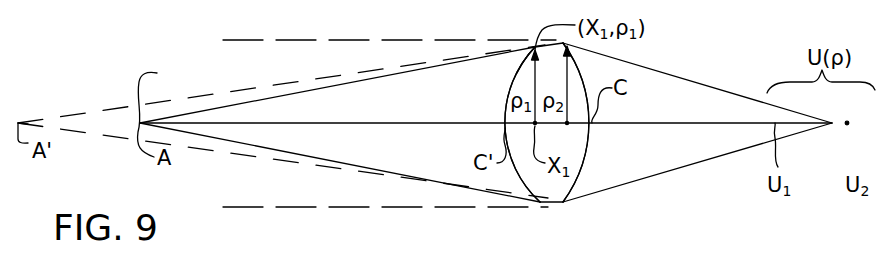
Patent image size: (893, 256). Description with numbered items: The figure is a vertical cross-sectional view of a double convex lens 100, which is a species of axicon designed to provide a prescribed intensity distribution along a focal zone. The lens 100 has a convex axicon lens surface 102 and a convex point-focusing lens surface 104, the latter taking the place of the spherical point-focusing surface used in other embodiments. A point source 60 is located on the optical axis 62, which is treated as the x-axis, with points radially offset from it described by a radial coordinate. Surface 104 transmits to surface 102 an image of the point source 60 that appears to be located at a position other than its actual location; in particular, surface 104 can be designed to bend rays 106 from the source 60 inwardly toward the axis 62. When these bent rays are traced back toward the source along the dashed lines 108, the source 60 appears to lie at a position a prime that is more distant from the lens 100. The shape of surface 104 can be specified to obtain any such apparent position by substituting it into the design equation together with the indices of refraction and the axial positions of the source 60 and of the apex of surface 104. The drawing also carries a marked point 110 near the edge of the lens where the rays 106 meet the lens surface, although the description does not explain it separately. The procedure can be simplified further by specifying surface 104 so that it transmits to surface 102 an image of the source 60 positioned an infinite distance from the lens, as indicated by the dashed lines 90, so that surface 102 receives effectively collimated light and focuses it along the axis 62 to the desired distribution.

The point source 60 is at (161, 110).
The optical axis 62 is at (360, 123).
The dashed lines 90 is at (258, 39).
The double convex lens 100 is at (552, 206).
The convex axicon lens surface 102 is at (587, 143).
The convex point-focusing lens surface 104 is at (510, 88).
The rays 106 is at (403, 70).
The dashed lines 108 is at (232, 88).
The ray intersection point on lens 110 is at (517, 73).